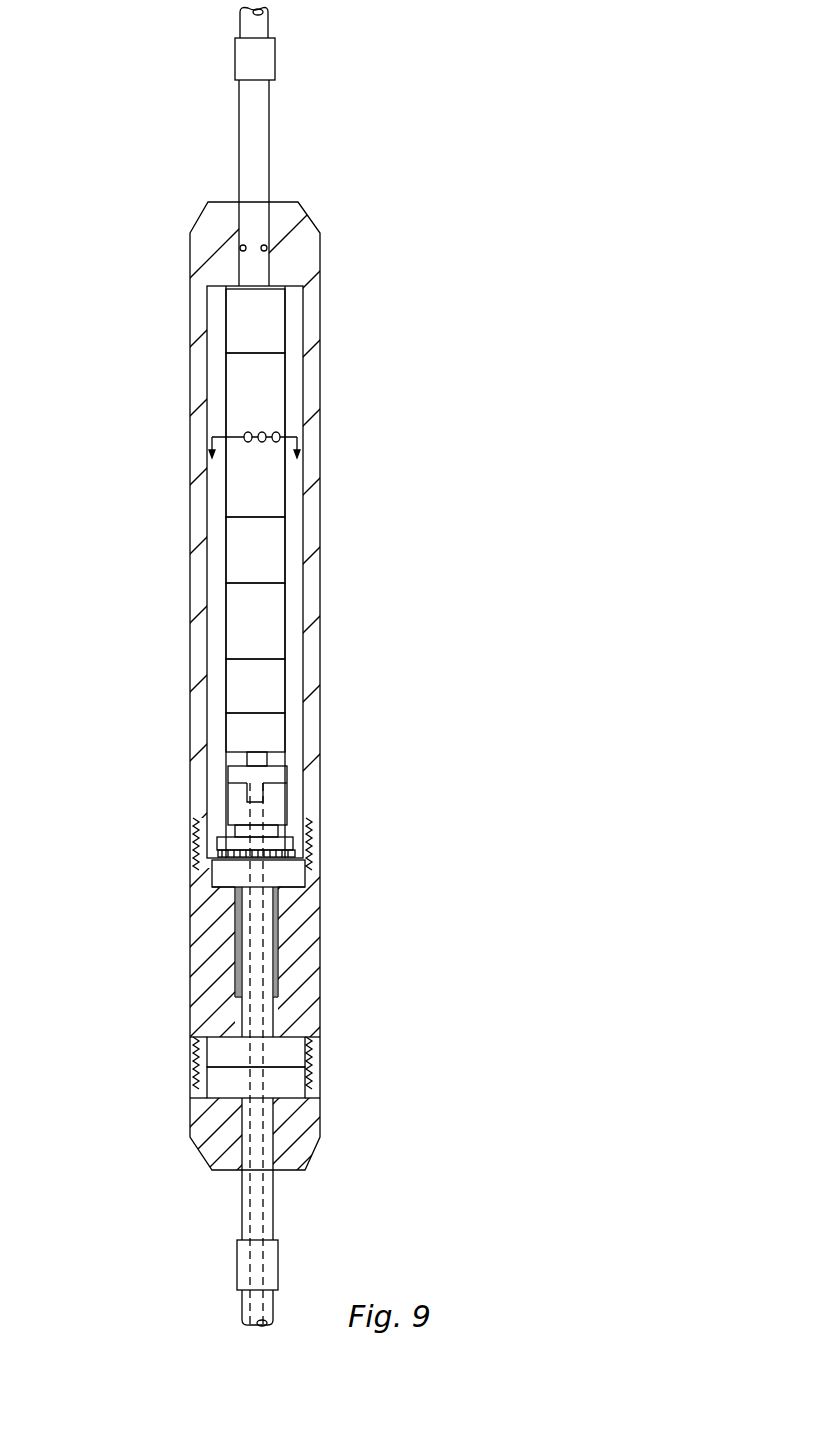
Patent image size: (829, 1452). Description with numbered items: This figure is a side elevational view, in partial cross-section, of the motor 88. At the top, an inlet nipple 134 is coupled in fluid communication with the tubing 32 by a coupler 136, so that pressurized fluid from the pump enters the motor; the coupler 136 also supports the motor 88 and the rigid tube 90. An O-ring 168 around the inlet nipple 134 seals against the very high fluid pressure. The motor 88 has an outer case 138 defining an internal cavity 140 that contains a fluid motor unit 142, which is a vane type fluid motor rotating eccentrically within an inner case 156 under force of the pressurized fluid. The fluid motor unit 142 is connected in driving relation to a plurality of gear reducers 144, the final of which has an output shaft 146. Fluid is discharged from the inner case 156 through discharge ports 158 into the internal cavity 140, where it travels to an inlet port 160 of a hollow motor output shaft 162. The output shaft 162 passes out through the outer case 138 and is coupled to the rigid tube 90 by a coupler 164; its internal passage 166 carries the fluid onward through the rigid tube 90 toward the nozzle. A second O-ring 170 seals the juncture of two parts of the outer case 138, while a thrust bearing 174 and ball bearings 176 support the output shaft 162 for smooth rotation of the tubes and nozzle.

The tubing 32 is at (268, 22).
The coupler 136 is at (275, 67).
The inlet nipple 134 is at (239, 133).
The O-ring 168 is at (265, 248).
The outer case 138 is at (320, 300).
The internal cavity 140 is at (297, 382).
The fluid motor unit 142 is at (207, 408).
The inner case 156 is at (226, 375).
The discharge ports 158 is at (276, 430).
The gear reducers 144 is at (287, 550).
The output shaft 146 is at (268, 760).
The inlet port 160 is at (255, 793).
The motor output shaft 162 is at (287, 808).
The second O-ring 170 is at (305, 873).
The thrust bearing 174 is at (207, 875).
The ball bearings 176 is at (197, 1045).
The internal passage 166 is at (272, 1203).
The coupler 164 is at (278, 1262).
The rigid tube 90 is at (242, 1308).
The motor 88 is at (386, 1118).